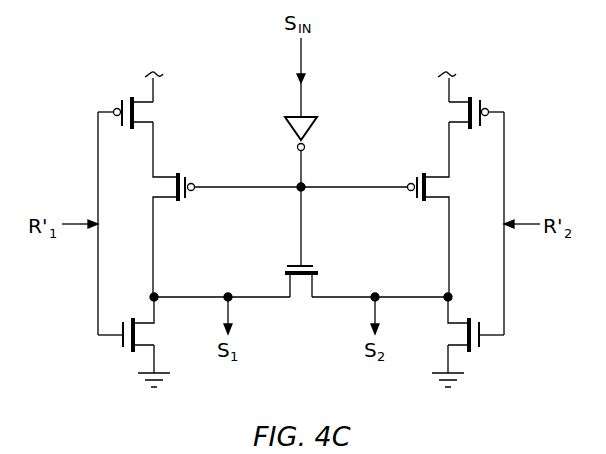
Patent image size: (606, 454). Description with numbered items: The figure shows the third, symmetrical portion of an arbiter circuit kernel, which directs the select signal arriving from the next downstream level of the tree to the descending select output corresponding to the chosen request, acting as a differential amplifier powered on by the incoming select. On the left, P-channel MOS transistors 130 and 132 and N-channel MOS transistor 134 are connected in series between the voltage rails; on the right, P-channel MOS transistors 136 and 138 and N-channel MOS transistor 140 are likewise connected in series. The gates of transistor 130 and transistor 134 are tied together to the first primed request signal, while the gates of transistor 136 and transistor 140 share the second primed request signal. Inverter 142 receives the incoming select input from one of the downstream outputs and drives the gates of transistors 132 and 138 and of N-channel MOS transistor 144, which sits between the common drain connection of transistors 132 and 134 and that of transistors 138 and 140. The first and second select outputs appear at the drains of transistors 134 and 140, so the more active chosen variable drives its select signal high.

The P-channel MOS transistor 130 is at (152, 112).
The P-channel MOS transistor 132 is at (183, 172).
The N-channel MOS transistor 134 is at (128, 350).
The P-channel MOS transistor 136 is at (478, 97).
The P-channel MOS transistor 138 is at (420, 172).
The N-channel MOS transistor 140 is at (478, 350).
The inverter 142 is at (312, 125).
The N-channel MOS transistor 144 is at (312, 270).